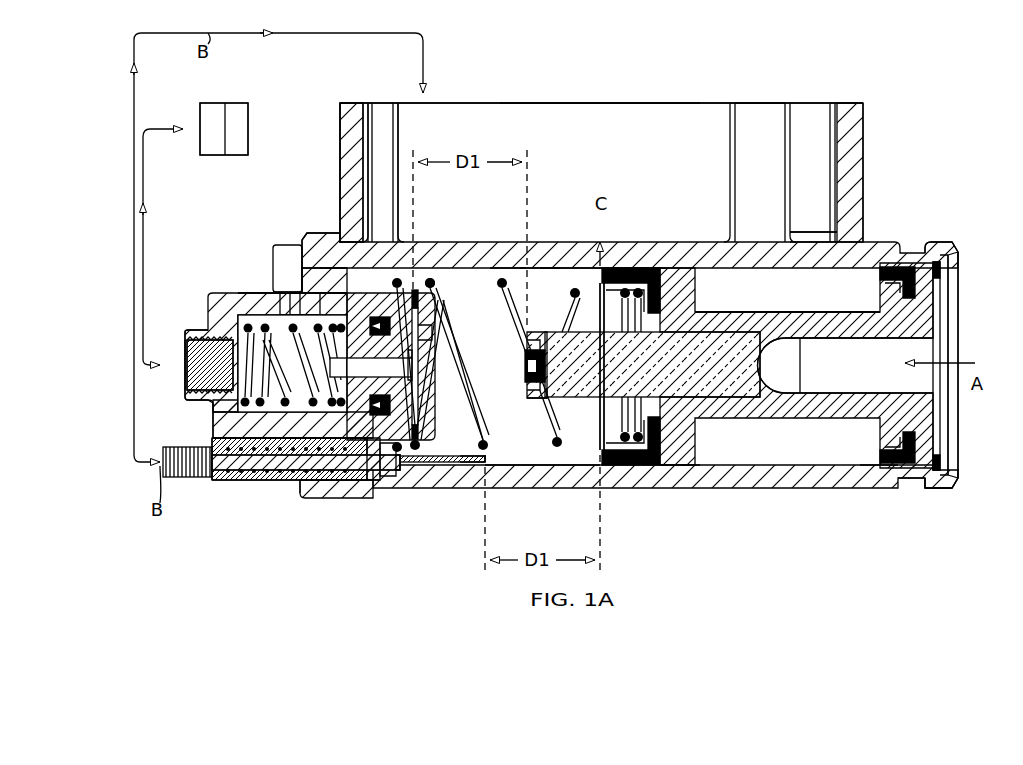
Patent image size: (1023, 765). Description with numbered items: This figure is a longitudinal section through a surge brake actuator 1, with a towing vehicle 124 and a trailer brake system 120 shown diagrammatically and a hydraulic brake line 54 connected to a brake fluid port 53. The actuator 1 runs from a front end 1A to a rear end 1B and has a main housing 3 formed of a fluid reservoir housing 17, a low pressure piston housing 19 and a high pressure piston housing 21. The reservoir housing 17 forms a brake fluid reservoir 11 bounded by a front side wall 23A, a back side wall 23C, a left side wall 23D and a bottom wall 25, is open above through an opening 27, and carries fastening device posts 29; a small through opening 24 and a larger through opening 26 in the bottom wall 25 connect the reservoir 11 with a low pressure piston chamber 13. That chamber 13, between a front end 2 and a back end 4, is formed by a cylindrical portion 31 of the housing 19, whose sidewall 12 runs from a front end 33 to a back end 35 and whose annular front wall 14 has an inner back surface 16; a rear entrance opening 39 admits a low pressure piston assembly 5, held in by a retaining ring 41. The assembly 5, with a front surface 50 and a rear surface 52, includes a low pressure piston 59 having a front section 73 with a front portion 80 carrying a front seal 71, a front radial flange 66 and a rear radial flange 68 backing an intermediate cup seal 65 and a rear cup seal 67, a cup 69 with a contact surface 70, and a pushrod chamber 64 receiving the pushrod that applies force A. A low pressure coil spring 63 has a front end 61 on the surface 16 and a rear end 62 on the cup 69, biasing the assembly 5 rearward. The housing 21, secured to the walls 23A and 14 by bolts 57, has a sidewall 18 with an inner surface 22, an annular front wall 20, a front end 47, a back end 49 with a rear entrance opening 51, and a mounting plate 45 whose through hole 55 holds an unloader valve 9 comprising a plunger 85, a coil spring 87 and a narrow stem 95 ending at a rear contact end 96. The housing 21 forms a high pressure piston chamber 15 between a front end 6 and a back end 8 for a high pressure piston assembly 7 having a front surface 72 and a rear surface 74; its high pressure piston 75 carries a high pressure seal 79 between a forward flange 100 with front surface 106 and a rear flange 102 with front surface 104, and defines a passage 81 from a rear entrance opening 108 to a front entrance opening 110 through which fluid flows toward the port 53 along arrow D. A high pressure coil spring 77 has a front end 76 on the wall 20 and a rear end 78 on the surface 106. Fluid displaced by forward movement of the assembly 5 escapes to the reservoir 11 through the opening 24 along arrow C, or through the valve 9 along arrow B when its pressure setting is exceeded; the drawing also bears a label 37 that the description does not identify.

The surge brake actuator 1 is at (722, 62).
The front end 1A is at (175, 375).
The rear end 1B is at (962, 453).
The front end 2 is at (376, 242).
The inner back surface 16 is at (383, 172).
The main housing 3 is at (345, 190).
The back end 4 is at (941, 409).
The low pressure piston assembly 5 is at (775, 312).
The front end 6 is at (290, 288).
The high pressure piston assembly 7 is at (302, 300).
The back end 8 is at (415, 388).
The unloader valve 9 is at (262, 482).
The brake fluid reservoir 11 is at (545, 136).
The cylindrical sidewall 12 is at (562, 266).
The low pressure piston chamber 13 is at (516, 470).
The annular front wall 14 is at (345, 242).
The high pressure piston chamber 15 is at (243, 418).
The fluid reservoir housing 17 is at (457, 103).
The cylindrical sidewall 18 is at (395, 478).
The low pressure piston housing 19 is at (645, 266).
The annular front wall 20 is at (216, 400).
The high pressure piston housing 21 is at (213, 296).
The inner surface 22 is at (287, 268).
The front side wall 23A is at (341, 110).
The back side wall 23C is at (866, 106).
The left side wall 23D is at (608, 103).
The small through opening 24 is at (620, 266).
The bottom wall 25 is at (540, 266).
The larger through opening 26 is at (690, 266).
The opening 27 is at (735, 95).
The fastening device posts 29 is at (772, 103).
The cylindrical portion 31 is at (542, 507).
The front end 33 is at (343, 498).
The back end 35 is at (940, 490).
The return spring 37 is at (471, 441).
The rear entrance opening 39 is at (964, 356).
The retaining ring 41 is at (940, 242).
The mounting plate 45 is at (308, 250).
The front end 47 is at (184, 332).
The back end 49 is at (421, 254).
The front surface 50 is at (512, 341).
The rear entrance opening 51 is at (431, 396).
The rear surface 52 is at (936, 304).
The brake fluid port 53 is at (172, 355).
The hydraulic brake line 54 is at (144, 182).
The through hole 55 is at (300, 483).
The bolts 57 is at (292, 266).
The low pressure piston 59 is at (706, 331).
The front end 61 is at (405, 480).
The rear end 62 is at (652, 364).
The low pressure coil spring 63 is at (508, 266).
The pushrod chamber 64 is at (837, 381).
The intermediate cup seal 65 is at (652, 466).
The front radial flange 66 is at (680, 488).
The rear cup seal 67 is at (878, 466).
The rear radial flange 68 is at (922, 467).
The cup 69 is at (601, 446).
The contact surface 70 is at (600, 460).
The front seal 71 is at (523, 361).
The front surface 72 is at (345, 393).
The front section 73 is at (535, 333).
The rear surface 74 is at (521, 296).
The high pressure piston 75 is at (418, 332).
The front end 76 is at (252, 334).
The high pressure coil spring 77 is at (292, 326).
The rear end 78 is at (297, 262).
The high pressure seal 79 is at (320, 266).
The front portion 80 is at (546, 394).
The passage 81 is at (419, 352).
The plunger 85 is at (335, 482).
The coil spring 87 is at (242, 481).
The narrow stem 95 is at (480, 463).
The rear contact end 96 is at (514, 474).
The forward flange 100 is at (375, 492).
The rear flange 102 is at (388, 478).
The front surface 104 is at (433, 330).
The front surface 106 is at (300, 497).
The rear entrance opening 108 is at (410, 358).
The front entrance opening 110 is at (345, 377).
The brake system 120 is at (213, 108).
The towing vehicle 124 is at (237, 106).